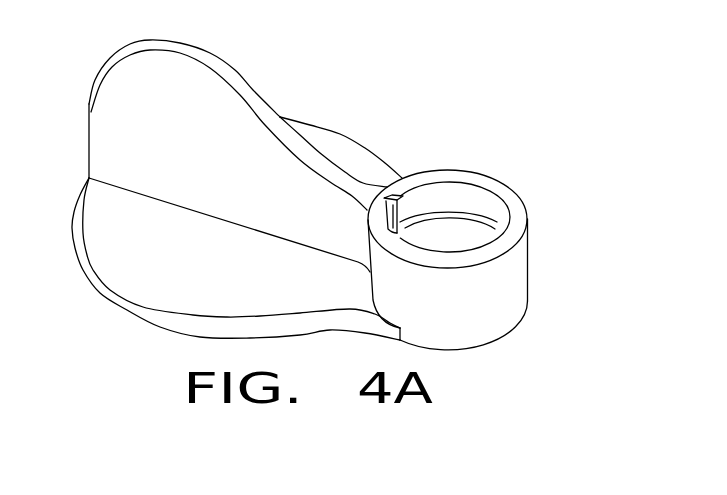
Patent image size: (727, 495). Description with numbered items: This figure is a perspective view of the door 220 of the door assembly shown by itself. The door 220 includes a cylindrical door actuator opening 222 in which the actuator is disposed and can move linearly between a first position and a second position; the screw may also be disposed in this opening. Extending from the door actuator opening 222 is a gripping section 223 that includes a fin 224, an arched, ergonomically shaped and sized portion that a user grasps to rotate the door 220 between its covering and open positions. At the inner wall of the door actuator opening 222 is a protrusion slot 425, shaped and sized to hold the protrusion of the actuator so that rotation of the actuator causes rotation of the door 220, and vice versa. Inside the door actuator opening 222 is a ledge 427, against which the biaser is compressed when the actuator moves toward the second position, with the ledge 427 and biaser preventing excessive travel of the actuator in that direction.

The door 220 is at (341, 108).
The door actuator opening 222 is at (485, 197).
The gripping section 223 is at (136, 202).
The fin 224 is at (173, 50).
The protrusion slot 425 is at (386, 194).
The ledge 427 is at (425, 213).